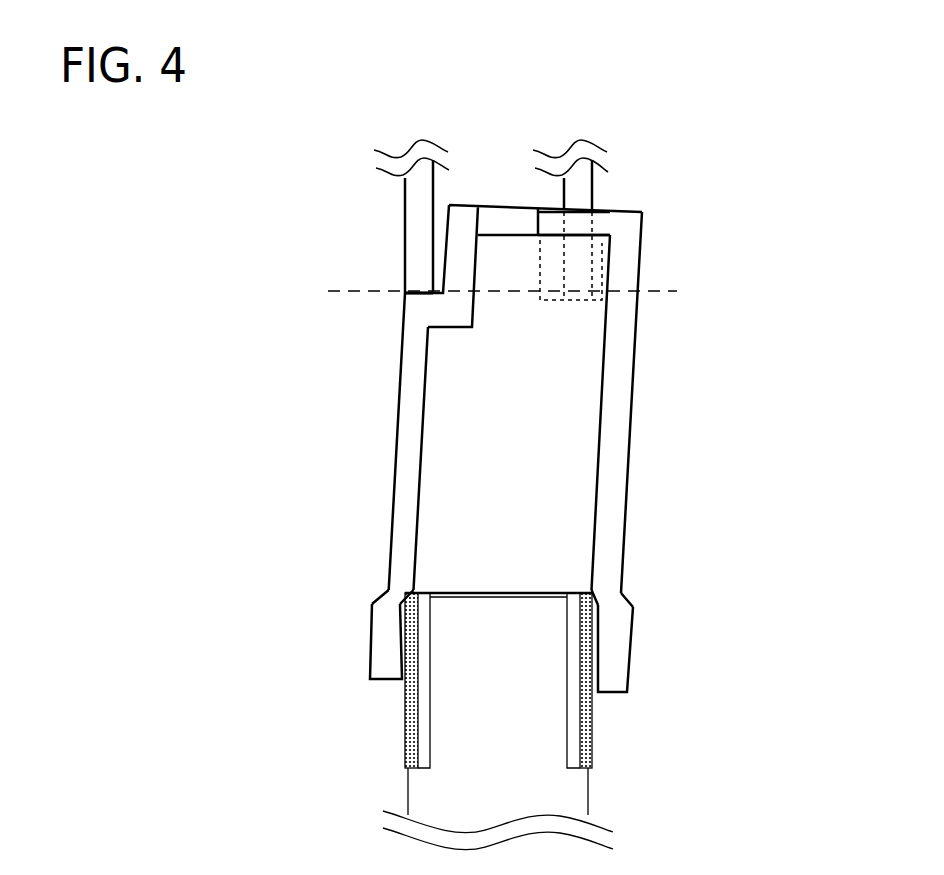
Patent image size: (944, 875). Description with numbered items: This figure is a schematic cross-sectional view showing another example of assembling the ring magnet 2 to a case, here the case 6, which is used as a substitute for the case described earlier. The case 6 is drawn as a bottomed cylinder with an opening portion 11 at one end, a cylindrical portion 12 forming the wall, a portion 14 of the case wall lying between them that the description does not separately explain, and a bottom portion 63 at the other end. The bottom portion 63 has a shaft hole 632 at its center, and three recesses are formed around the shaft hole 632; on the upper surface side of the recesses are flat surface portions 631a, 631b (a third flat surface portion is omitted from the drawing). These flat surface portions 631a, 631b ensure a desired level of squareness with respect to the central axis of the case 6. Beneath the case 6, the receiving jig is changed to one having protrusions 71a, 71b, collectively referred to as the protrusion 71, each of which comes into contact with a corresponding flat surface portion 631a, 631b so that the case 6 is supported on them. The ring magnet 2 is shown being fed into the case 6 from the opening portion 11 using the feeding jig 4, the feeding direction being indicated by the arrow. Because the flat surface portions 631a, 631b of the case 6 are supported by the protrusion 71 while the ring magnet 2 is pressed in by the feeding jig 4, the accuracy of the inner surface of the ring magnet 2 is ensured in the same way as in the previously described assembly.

The ring magnet 2 is at (598, 735).
The feeding jig 4 is at (380, 797).
The case 6 is at (780, 205).
The opening portion 11 is at (635, 660).
The cylindrical portion 12 is at (630, 448).
The bent portion 14 is at (625, 592).
The bottom portion 63 is at (623, 317).
The flat surface portion 631a is at (437, 292).
The flat surface portion 631b is at (575, 302).
The shaft hole 632 is at (508, 225).
The protrusion 71 is at (280, 113).
The protrusion 71a is at (410, 226).
The protrusion 71b is at (578, 192).